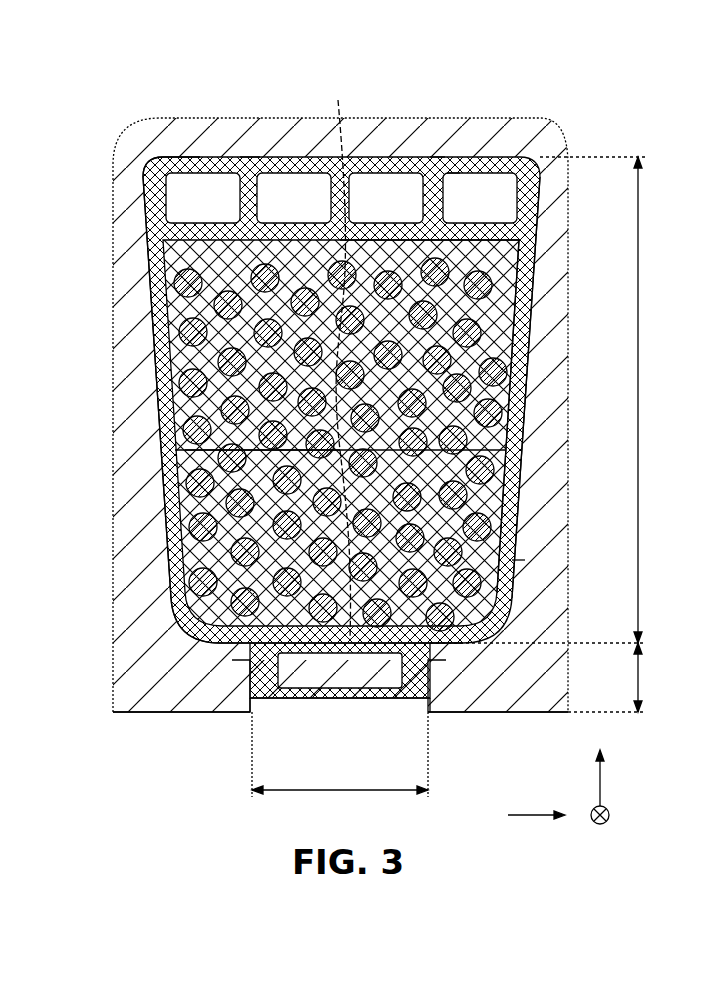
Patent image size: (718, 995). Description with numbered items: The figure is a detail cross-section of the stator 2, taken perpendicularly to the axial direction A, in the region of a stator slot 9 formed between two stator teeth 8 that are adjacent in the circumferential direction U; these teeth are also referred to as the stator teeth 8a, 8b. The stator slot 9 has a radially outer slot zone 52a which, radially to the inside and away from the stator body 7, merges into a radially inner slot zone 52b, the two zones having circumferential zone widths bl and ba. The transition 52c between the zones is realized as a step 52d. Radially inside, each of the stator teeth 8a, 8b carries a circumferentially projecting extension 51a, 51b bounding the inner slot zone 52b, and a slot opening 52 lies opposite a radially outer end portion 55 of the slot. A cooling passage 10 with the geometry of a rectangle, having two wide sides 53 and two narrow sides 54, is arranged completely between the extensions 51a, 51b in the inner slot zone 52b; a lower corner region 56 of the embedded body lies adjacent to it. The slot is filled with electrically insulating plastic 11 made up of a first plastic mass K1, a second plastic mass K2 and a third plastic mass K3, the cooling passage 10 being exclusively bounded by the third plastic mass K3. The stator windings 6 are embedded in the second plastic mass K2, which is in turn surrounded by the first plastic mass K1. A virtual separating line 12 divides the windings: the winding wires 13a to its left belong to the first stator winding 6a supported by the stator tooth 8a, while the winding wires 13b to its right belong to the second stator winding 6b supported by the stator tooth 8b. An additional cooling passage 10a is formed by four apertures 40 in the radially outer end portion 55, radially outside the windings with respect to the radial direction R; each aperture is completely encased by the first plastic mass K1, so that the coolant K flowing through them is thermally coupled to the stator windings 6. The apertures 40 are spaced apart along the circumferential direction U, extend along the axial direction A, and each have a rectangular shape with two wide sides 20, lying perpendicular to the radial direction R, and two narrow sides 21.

The stator 2 is at (612, 125).
The stator body 7 is at (148, 135).
The wide sides 20 is at (198, 160).
The narrow sides 21 is at (250, 157).
The virtual separating line 12 is at (336, 353).
The electrically insulating plastic 11 is at (437, 157).
The first plastic mass K1 is at (437, 157).
The second plastic mass K2 is at (525, 558).
The third plastic mass K3 is at (368, 700).
The radially outer end portion 55 is at (150, 160).
The additional cooling passage 10a is at (527, 195).
The winding wires 13a is at (150, 330).
The winding wires 13b is at (535, 330).
The stator teeth 8 is at (339, 415).
The first stator tooth 8a is at (135, 384).
The second stator tooth 8b is at (548, 492).
The stator windings 6 is at (341, 359).
The first stator winding 6a is at (170, 525).
The second stator winding 6b is at (520, 362).
The radially outer slot zone 52a is at (642, 392).
The stator slot 9 is at (520, 442).
The zone width ba is at (172, 450).
The lower corner region 56 is at (183, 600).
The wide sides 53 is at (190, 628).
The transition 52c is at (178, 650).
The step 52d is at (445, 672).
The narrow sides 54 is at (175, 690).
The radially inner slot zone 52b is at (642, 677).
The extension 51a is at (226, 715).
The extension 51b is at (457, 715).
The slot opening 52 is at (340, 700).
The zone width bl is at (340, 795).
The coolant K is at (184, 209).
The apertures 40 is at (341, 198).
The cooling passage 10 is at (321, 681).
The circumferential direction U is at (530, 812).
The radial direction R is at (605, 785).
The axial direction A is at (612, 818).